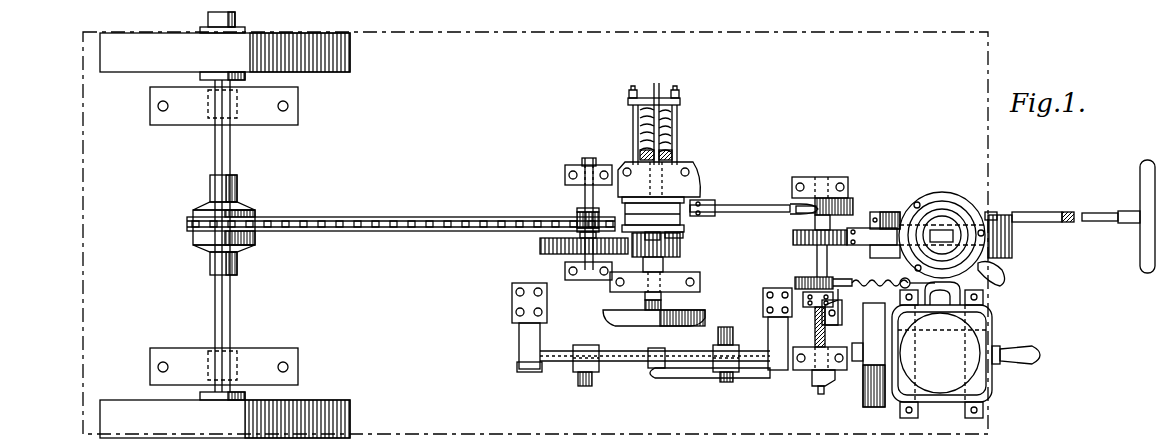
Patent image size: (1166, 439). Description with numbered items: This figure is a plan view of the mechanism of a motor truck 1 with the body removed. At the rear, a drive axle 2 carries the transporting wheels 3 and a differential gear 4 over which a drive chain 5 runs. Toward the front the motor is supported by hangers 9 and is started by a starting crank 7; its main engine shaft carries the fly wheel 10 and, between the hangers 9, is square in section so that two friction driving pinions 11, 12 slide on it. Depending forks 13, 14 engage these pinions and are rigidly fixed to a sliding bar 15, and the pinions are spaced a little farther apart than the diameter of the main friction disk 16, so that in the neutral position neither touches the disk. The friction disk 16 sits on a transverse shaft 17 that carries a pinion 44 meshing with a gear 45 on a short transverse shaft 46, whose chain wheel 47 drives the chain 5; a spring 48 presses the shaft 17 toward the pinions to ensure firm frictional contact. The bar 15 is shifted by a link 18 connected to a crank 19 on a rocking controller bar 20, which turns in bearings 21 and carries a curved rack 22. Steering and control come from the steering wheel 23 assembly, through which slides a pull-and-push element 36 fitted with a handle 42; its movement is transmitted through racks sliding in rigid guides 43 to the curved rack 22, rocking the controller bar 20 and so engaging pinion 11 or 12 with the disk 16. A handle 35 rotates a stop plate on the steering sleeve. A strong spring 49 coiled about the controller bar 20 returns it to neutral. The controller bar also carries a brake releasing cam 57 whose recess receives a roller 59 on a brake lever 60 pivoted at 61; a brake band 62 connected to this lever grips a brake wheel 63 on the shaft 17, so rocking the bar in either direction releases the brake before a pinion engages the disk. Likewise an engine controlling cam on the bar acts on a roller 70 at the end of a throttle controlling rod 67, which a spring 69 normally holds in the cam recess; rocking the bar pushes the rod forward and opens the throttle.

The frame 1 is at (93, 244).
The drive axle 2 is at (214, 150).
The transporting wheels 3 is at (340, 52).
The differential gear 4 is at (196, 228).
The drive chain 5 is at (337, 216).
The starting crank 7 is at (1015, 349).
The hangers 9 is at (790, 238).
The fly wheel 10 is at (872, 406).
The friction driving pinion 11 is at (583, 394).
The friction driving pinion 12 is at (726, 383).
The depending fork 13 is at (598, 366).
The depending fork 14 is at (738, 345).
The sliding bar 15 is at (556, 352).
The main friction disk 16 is at (690, 320).
The shaft 17 is at (693, 239).
The link 18 is at (692, 379).
The crank 19 is at (832, 388).
The controller bar 20 is at (816, 260).
The bearings 21 is at (832, 180).
The curved rack 22 is at (800, 232).
The steering wheel 23 is at (1012, 252).
The handle 35 is at (1003, 284).
The pull-and-push element 36 is at (893, 213).
The handle 42 is at (1098, 212).
The rigid guides 43 is at (882, 205).
The pinion 44 is at (680, 250).
The gear 45 is at (540, 246).
The short transverse shaft 46 is at (568, 183).
The chain wheel 47 is at (578, 214).
The spring 48 is at (661, 124).
The spring 49 is at (825, 336).
The brake releasing cam 57 is at (852, 228).
The roller 59 is at (805, 207).
The brake lever 60 is at (740, 207).
The pivot 61 is at (705, 206).
The brake band 62 is at (680, 198).
The brake wheel 63 is at (620, 170).
The throttle controlling rod 67 is at (942, 350).
The spring 69 is at (890, 278).
The roller 70 is at (852, 278).